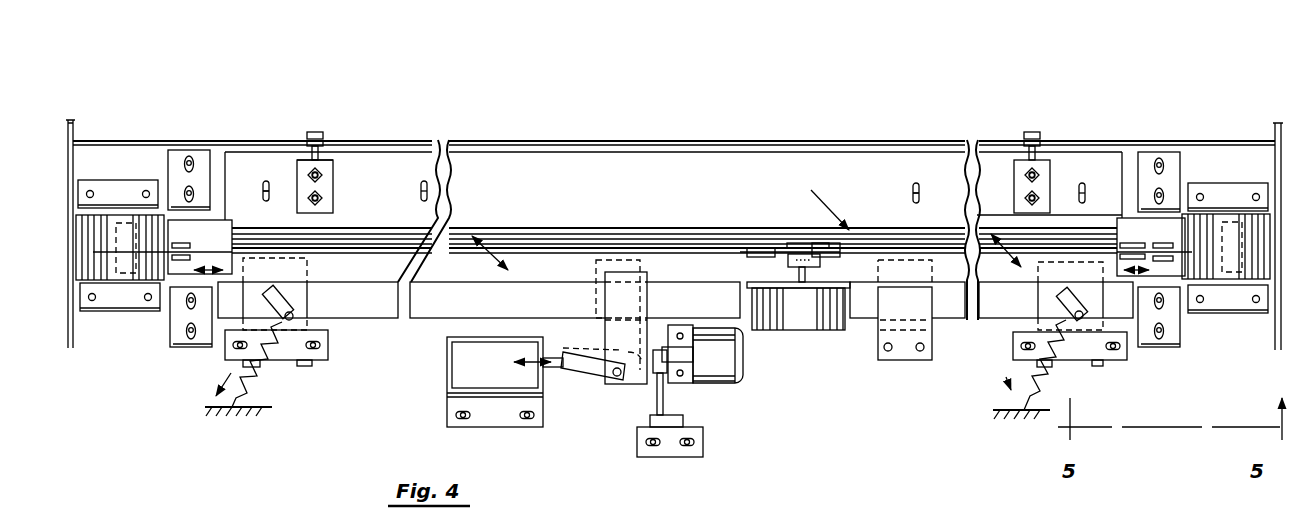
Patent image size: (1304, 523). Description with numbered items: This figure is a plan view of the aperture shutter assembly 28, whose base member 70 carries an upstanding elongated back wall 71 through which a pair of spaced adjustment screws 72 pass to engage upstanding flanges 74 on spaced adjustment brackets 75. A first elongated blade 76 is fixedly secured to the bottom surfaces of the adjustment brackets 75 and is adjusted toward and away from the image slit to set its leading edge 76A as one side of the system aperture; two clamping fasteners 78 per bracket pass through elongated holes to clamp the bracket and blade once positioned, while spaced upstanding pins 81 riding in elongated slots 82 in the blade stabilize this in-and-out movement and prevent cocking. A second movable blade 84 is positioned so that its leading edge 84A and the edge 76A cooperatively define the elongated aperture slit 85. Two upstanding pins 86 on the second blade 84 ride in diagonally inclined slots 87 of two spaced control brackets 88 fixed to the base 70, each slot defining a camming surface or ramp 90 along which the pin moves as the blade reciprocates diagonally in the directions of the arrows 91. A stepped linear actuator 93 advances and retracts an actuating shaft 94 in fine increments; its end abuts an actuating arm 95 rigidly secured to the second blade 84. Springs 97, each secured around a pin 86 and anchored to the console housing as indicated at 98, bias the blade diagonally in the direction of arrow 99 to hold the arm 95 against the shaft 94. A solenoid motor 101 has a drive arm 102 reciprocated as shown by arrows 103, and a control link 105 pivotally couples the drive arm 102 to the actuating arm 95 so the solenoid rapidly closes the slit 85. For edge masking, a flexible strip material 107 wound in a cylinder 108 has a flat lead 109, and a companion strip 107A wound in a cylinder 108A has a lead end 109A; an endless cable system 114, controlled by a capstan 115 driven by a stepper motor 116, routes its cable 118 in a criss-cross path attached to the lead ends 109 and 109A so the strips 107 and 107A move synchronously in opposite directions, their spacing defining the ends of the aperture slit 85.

The aperture shutter assembly 28 is at (1036, 103).
The base member 70 is at (871, 150).
The back wall 71 is at (819, 140).
The adjustment screws 72 is at (321, 132).
The upstanding flanges 74 is at (306, 158).
The adjustment brackets 75 is at (334, 205).
The first elongated blade 76 is at (584, 175).
The leading edge of first blade 76A is at (684, 233).
The clamping fasteners 78 is at (320, 199).
The upstanding pins 81 is at (262, 184).
The elongated slots 82 is at (262, 198).
The second movable blade 84 is at (433, 283).
The leading edge of second blade 84A is at (522, 240).
The aperture slit 85 is at (553, 237).
The upstanding pins 86 is at (312, 295).
The diagonally inclined slots 87 is at (284, 300).
The control brackets 88 is at (312, 308).
The camming surface 90 is at (238, 327).
The arrows 91 is at (492, 258).
The stepped linear actuator 93 is at (728, 368).
The actuating shaft 94 is at (665, 358).
The actuating arm 95 is at (636, 380).
The springs 97 is at (247, 376).
The console housing attachment 98 is at (236, 410).
The arrow 99 is at (1006, 379).
The solenoid motor 101 is at (447, 362).
The drive arm 102 is at (552, 370).
The arrows 103 is at (531, 360).
The control link 105 is at (584, 355).
The flexible strip material 107 is at (1168, 272).
The edge mask strip 107A is at (190, 226).
The cylinder 108 is at (1239, 215).
The cylinder 108A is at (112, 268).
The lead of strip 109 is at (1117, 220).
The lead end of strip 109A is at (232, 219).
The endless cable system 114 is at (811, 198).
The capstan 115 is at (787, 262).
The stepper motor 116 is at (806, 318).
The cable 118 is at (607, 248).